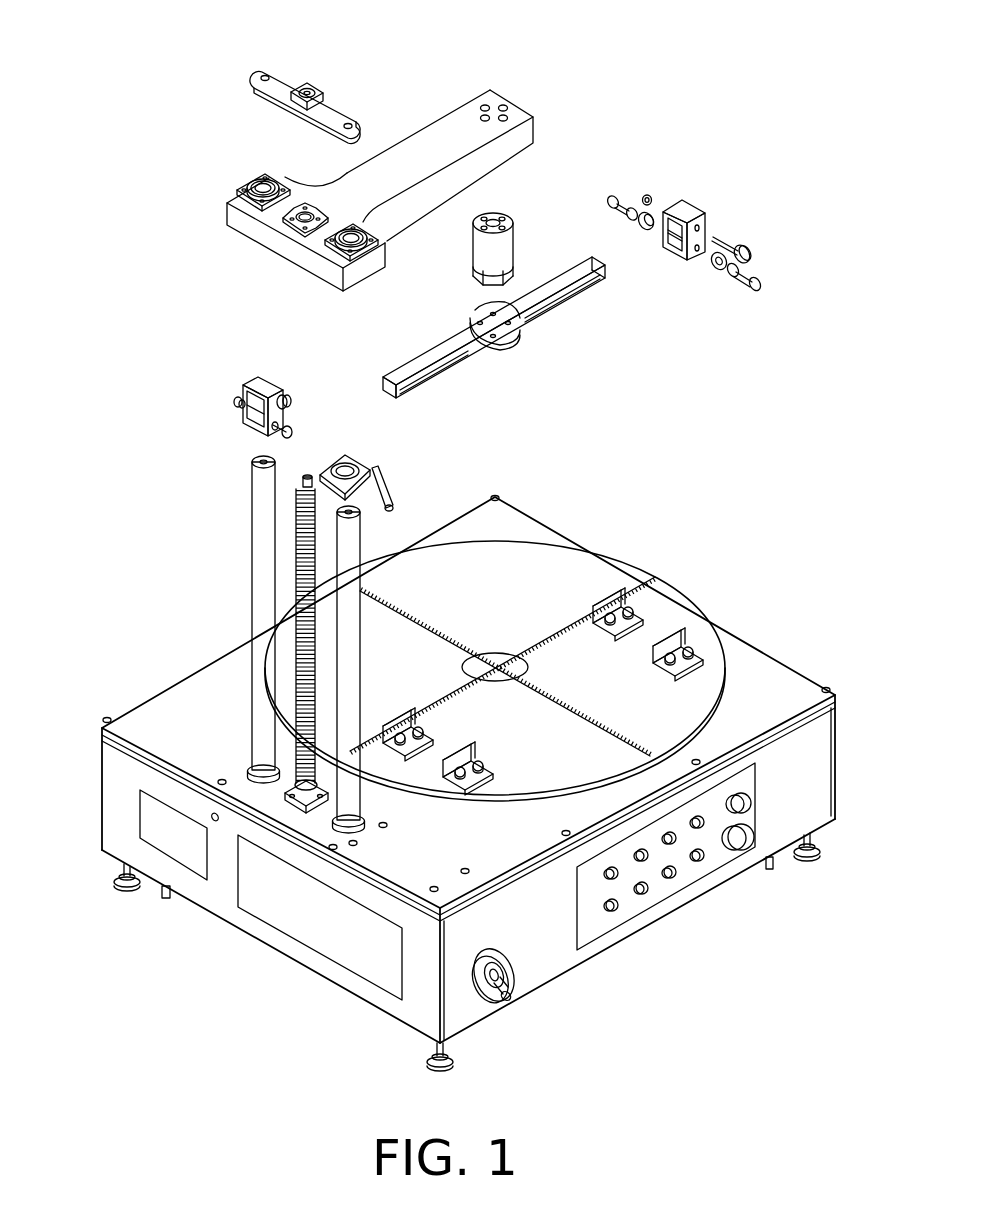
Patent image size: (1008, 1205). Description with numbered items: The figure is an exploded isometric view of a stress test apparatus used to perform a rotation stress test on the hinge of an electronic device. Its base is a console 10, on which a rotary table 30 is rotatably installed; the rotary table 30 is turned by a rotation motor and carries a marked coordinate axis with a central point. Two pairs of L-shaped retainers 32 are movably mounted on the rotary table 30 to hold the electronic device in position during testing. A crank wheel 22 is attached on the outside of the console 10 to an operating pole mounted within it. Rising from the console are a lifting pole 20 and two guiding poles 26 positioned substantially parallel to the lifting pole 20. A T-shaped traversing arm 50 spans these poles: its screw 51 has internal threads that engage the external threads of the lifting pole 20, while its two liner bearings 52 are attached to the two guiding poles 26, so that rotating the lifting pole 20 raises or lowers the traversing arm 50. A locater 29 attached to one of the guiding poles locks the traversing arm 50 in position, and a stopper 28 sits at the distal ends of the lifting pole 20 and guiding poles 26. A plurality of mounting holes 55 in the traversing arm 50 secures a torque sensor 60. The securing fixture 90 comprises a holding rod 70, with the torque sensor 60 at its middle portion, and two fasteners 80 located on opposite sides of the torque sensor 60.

The console 10 is at (750, 667).
The lifting pole 20 is at (303, 687).
The crank wheel 22 is at (507, 1003).
The guiding poles 26 is at (265, 558).
The stopper 28 is at (275, 95).
The locater 29 is at (370, 457).
The rotary table 30 is at (537, 565).
The L-shaped retainers 32 is at (625, 608).
The traversing arm 50 is at (383, 156).
The screw 51 is at (303, 227).
The liner bearings 52 is at (337, 252).
The mounting holes 55 is at (503, 100).
The torque sensor 60 is at (507, 250).
The holding rod 70 is at (527, 308).
The fasteners 80 is at (683, 286).
The securing fixture 90 is at (573, 323).